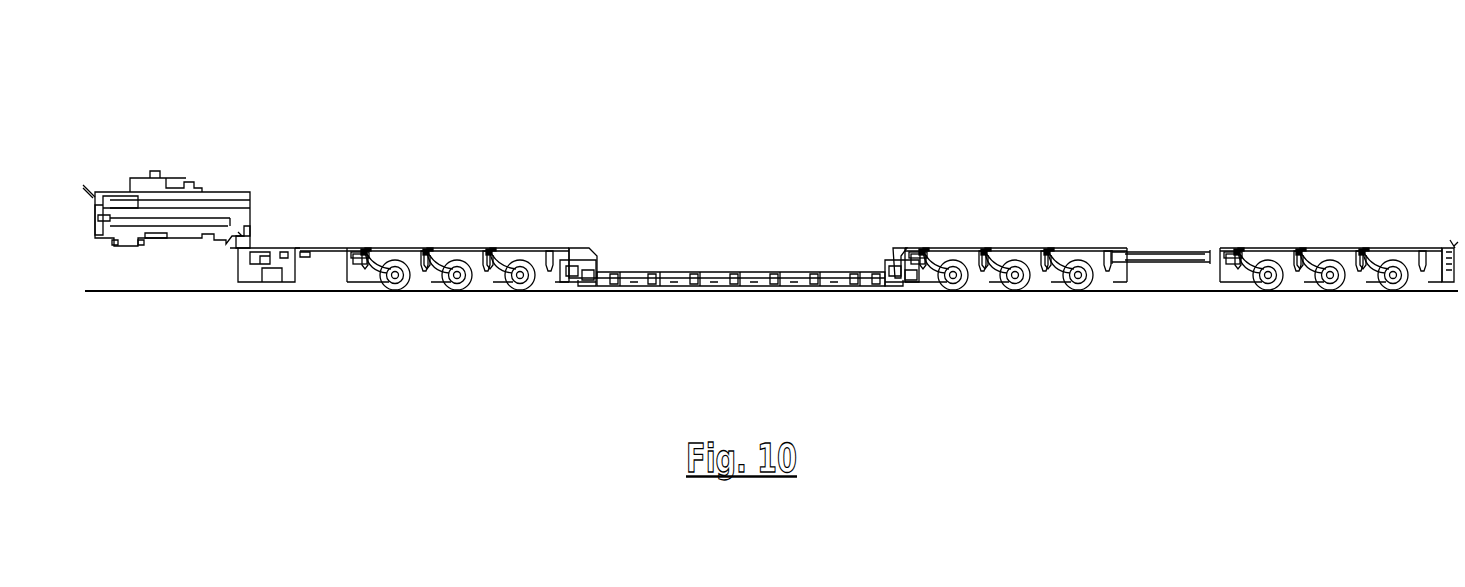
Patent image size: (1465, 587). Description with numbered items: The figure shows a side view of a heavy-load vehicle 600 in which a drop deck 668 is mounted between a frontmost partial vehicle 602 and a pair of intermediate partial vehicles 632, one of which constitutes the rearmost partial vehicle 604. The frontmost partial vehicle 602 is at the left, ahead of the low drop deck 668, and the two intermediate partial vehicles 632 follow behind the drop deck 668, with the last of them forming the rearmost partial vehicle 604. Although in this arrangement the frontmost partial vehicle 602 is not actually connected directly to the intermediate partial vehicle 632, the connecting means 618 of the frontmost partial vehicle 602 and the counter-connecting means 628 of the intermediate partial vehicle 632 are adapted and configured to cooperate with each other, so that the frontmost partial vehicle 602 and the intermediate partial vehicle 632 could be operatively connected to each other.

The heavy-load vehicle 600 is at (1000, 105).
The frontmost partial vehicle 602 is at (475, 258).
The rearmost partial vehicle 604 is at (1350, 258).
The connecting means 618 is at (570, 268).
The counter-connecting means 628 is at (905, 268).
The intermediate partial vehicle 632 is at (1030, 258).
The drop deck 668 is at (727, 277).